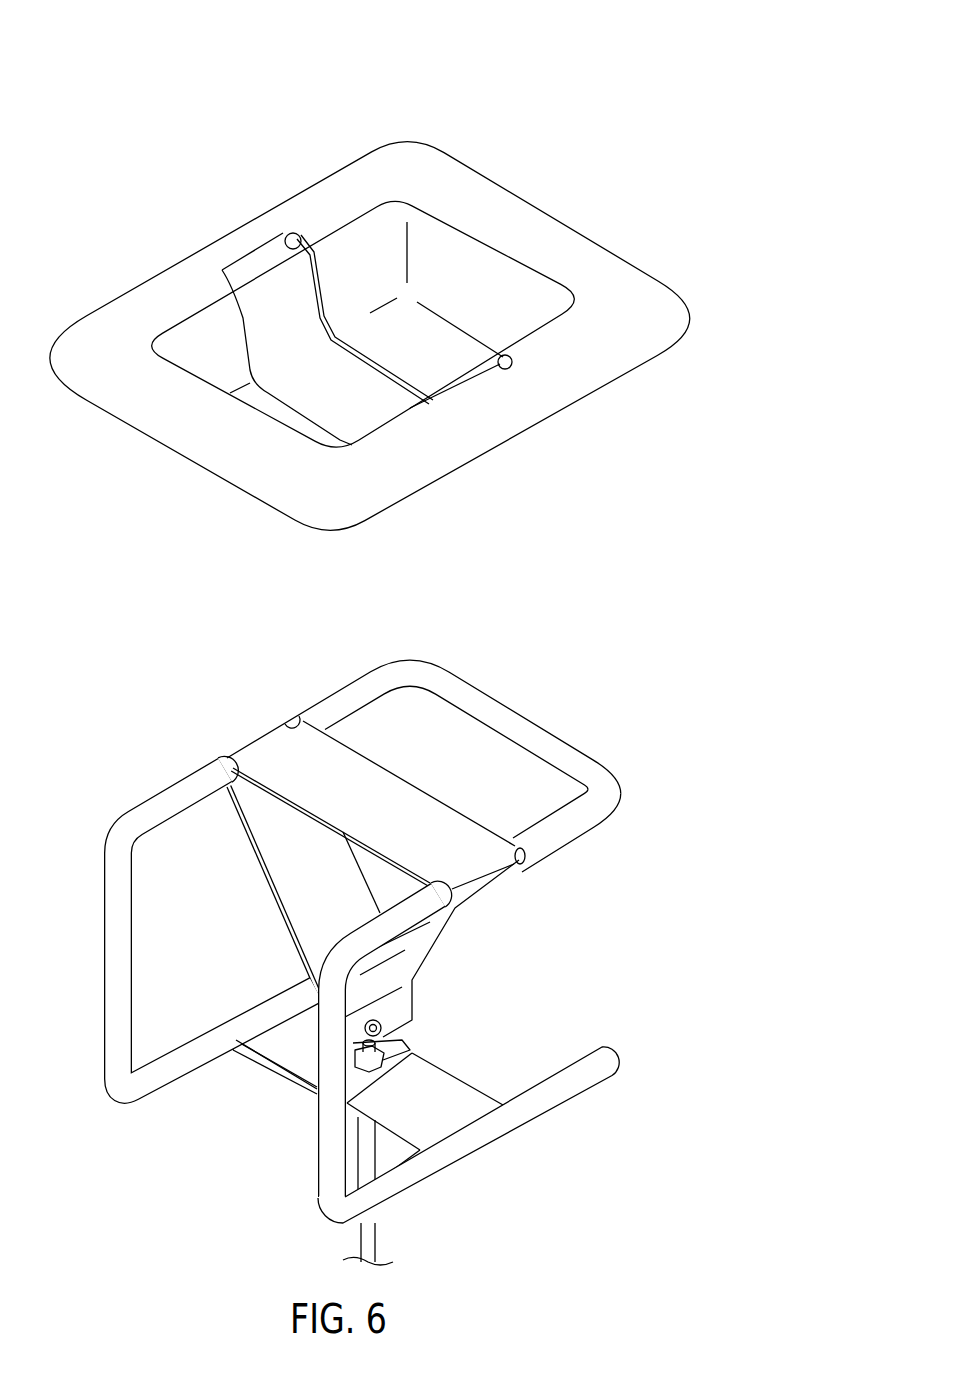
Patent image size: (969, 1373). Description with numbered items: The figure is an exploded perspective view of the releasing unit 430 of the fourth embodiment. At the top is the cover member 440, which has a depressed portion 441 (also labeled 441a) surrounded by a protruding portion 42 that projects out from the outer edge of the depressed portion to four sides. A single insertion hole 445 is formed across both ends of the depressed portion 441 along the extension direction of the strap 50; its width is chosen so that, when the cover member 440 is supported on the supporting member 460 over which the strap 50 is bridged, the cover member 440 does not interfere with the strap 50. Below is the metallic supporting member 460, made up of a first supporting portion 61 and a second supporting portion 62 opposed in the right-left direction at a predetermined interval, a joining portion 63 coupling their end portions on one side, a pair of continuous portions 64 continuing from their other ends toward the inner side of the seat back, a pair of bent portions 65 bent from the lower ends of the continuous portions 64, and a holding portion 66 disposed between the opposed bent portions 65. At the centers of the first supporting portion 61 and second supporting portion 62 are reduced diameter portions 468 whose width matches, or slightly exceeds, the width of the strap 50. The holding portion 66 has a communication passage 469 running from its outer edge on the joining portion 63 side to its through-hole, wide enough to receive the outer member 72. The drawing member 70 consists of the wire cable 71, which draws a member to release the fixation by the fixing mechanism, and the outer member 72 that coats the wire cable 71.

The releasing unit 430 is at (714, 90).
The cover member 440 is at (505, 138).
The protruding portion 42 is at (587, 260).
The depressed portion 441 is at (439, 289).
The engagement tab 441a is at (416, 352).
The insertion hole 445 is at (287, 236).
The supporting member 460 is at (502, 658).
The strap 50 is at (383, 803).
The first supporting portion 61 is at (573, 822).
The second supporting portion 62 is at (359, 693).
The joining portion 63 is at (517, 723).
The continuous portions 64 is at (122, 957).
The bent portions 65 is at (253, 1010).
The holding portion 66 is at (457, 1103).
The reduced diameter portions 468 is at (283, 728).
The communication passage 469 is at (412, 1053).
The drawing member 70 is at (287, 1073).
The wire cable 71 is at (316, 1087).
The outer member 72 is at (367, 1047).